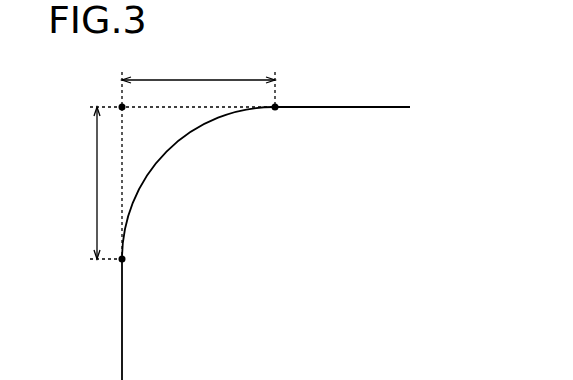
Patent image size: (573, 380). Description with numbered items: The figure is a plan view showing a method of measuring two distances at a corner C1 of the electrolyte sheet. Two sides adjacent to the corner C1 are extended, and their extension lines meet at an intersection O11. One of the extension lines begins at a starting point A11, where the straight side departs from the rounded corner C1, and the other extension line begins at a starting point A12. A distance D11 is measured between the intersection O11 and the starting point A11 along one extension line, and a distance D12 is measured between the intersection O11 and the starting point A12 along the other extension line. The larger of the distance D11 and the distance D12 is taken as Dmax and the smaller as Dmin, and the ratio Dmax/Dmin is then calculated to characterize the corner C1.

The intersection O11 is at (173, 164).
The starting point A11 is at (300, 91).
The starting point A12 is at (100, 277).
The distance D11 is at (198, 66).
The distance D12 is at (72, 183).
The corner C1 is at (182, 154).